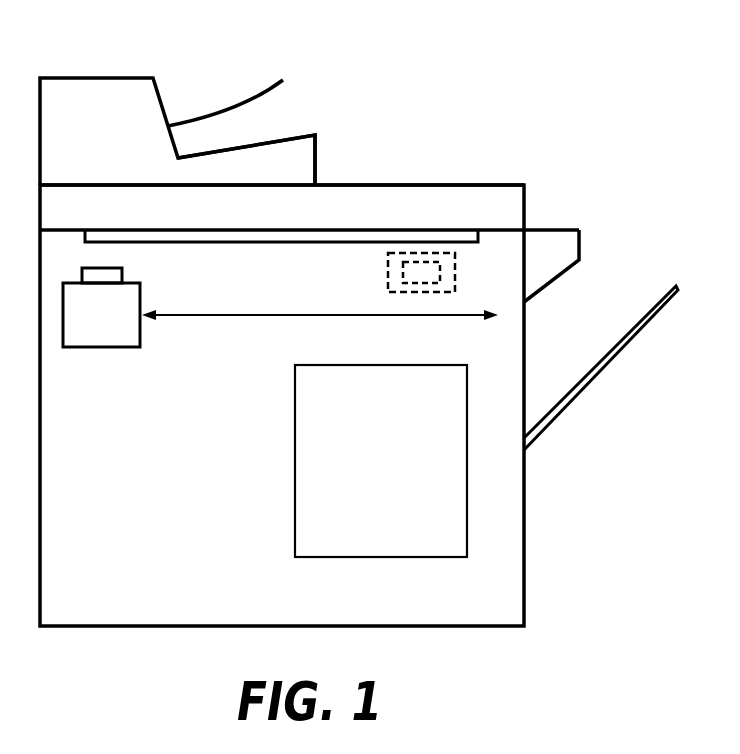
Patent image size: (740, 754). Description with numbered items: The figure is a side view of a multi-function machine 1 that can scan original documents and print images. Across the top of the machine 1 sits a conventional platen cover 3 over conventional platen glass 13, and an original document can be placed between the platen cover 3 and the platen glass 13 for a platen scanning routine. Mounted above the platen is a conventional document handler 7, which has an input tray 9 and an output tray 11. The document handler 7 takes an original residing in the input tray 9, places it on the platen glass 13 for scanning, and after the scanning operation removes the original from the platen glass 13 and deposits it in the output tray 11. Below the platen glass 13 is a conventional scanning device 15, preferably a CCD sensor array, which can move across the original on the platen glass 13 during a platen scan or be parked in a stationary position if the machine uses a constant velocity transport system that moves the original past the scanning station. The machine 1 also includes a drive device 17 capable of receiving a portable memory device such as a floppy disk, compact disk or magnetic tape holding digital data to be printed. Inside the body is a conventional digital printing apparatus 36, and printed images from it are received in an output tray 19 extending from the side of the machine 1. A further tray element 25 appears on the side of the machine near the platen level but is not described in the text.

The multi-function machine 1 is at (525, 523).
The platen cover 3 is at (478, 183).
The document handler 7 is at (87, 78).
The input tray 9 is at (217, 115).
The output tray 11 is at (280, 137).
The platen glass 13 is at (193, 242).
The scanning device 15 is at (103, 347).
The drive device 17 is at (388, 272).
The output tray 19 is at (608, 366).
The document exit tray 25 is at (580, 245).
The digital printing apparatus 36 is at (295, 480).